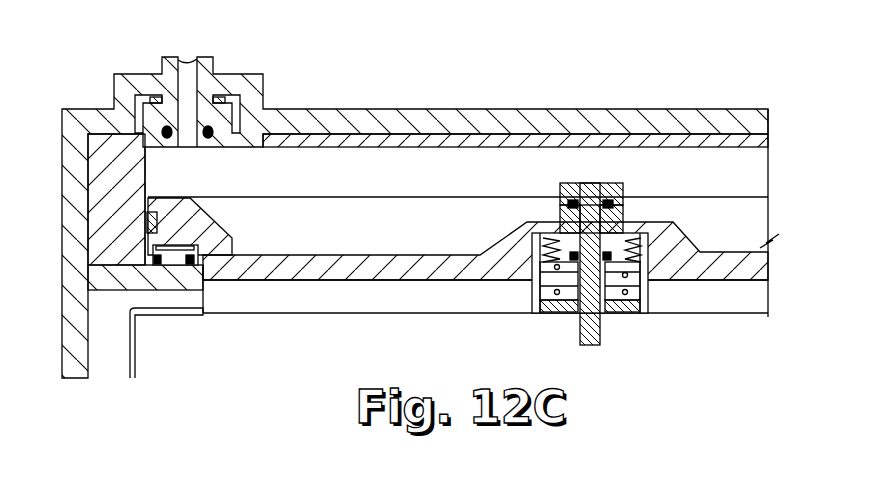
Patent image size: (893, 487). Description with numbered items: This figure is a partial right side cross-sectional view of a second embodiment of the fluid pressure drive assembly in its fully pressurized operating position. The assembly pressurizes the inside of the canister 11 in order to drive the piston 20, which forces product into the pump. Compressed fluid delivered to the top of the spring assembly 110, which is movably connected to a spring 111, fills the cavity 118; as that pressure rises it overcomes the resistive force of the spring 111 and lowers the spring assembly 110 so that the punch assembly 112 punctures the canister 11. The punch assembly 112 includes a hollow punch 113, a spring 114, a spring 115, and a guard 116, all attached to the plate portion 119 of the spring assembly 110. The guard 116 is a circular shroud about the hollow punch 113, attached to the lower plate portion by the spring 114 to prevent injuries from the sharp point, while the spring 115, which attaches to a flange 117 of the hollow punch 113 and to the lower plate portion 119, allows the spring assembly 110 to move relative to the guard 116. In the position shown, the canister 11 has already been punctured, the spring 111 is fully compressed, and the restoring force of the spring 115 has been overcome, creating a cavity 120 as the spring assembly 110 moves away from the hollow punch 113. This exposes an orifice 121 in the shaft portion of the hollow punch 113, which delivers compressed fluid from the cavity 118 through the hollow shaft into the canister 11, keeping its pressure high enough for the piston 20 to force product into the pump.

The canister 11 is at (182, 315).
The piston 20 is at (184, 76).
The spring assembly 110 is at (747, 250).
The spring 111 is at (220, 232).
The punch assembly 112 is at (612, 285).
The hollow punch 113 is at (575, 186).
The spring 114 is at (532, 243).
The spring 115 is at (562, 285).
The guard 116 is at (645, 300).
The flange 117 is at (552, 313).
The cavity 118 is at (393, 241).
The plate portion 119 is at (378, 283).
The cavity 120 is at (620, 218).
The orifice 121 is at (612, 212).